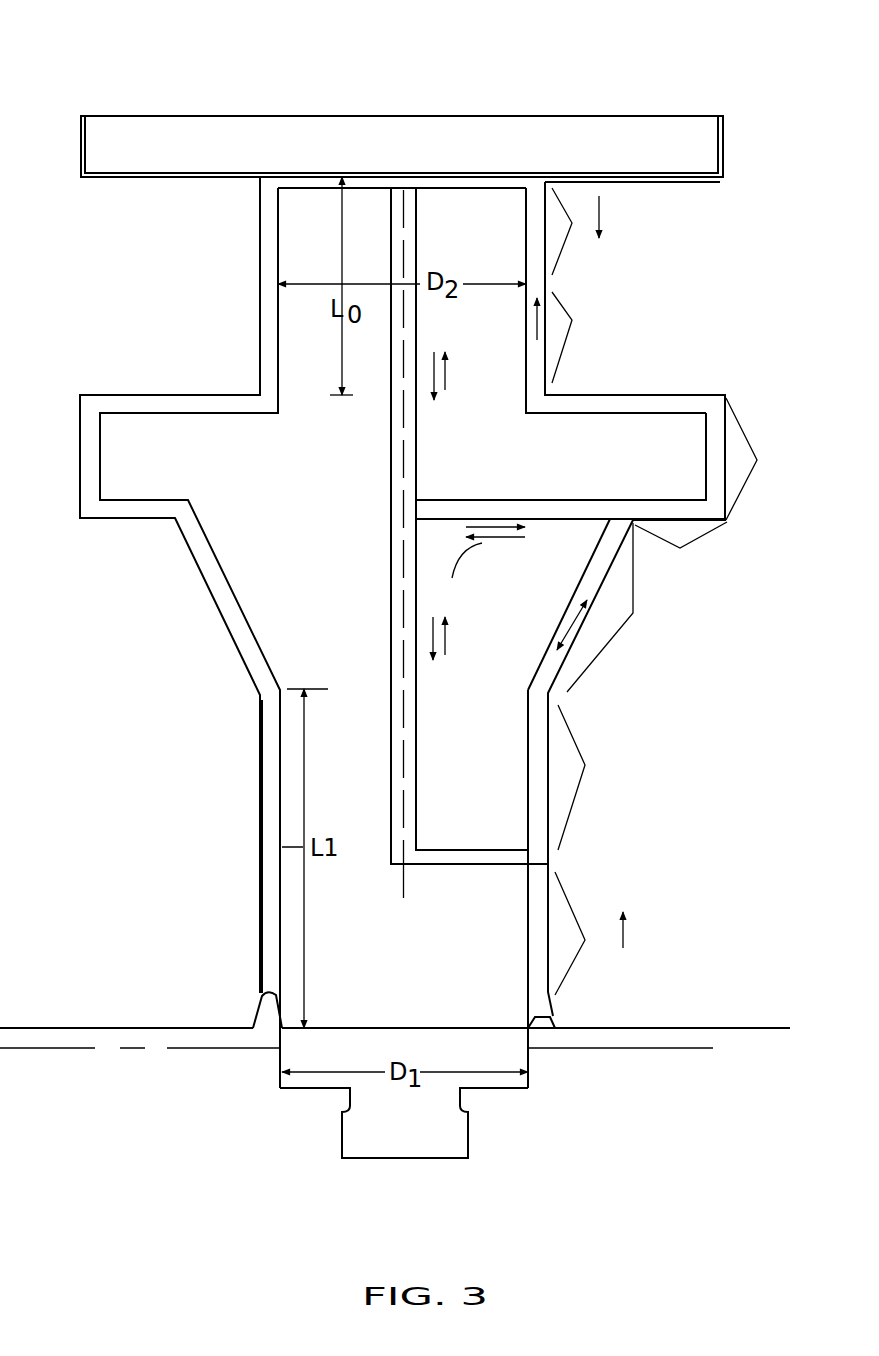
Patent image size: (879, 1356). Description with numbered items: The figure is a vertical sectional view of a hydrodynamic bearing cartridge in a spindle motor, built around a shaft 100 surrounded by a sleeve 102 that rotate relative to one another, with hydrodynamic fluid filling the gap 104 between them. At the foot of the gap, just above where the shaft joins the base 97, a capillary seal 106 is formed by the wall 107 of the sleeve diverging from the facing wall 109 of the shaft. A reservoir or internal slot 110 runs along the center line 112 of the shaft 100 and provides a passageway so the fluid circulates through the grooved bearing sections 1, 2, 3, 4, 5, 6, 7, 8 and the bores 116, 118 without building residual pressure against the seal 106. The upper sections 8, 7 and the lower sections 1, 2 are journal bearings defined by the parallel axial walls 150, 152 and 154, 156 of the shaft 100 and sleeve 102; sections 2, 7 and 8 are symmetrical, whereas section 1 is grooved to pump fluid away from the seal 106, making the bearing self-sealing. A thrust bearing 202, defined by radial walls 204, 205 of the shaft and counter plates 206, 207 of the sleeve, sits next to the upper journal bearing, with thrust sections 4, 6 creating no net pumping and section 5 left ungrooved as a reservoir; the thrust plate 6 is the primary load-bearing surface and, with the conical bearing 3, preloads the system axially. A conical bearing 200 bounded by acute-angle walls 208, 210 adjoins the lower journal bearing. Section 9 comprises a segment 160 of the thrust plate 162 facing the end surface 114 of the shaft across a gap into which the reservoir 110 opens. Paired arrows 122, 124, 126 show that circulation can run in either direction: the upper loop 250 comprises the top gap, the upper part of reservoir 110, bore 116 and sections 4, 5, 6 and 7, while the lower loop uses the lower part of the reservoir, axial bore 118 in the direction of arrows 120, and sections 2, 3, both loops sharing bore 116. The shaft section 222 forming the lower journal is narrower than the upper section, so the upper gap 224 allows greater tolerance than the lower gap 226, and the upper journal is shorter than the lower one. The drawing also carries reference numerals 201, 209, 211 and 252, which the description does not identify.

The bearing section 1 is at (589, 933).
The bearing section 2 is at (582, 777).
The bearing section 3 is at (608, 607).
The thrust bearing section 4 is at (681, 549).
The bearing section 5 is at (752, 459).
The thrust bearing section 6 is at (715, 388).
The bearing section 7 is at (568, 337).
The bearing section 8 is at (575, 231).
The bearing section 9 is at (530, 165).
The base 97 is at (433, 1123).
The shaft 100 is at (184, 470).
The sleeve 102 is at (72, 340).
The gap 104 is at (267, 332).
The capillary seal 106 is at (273, 1008).
The wall of the sleeve 107 is at (247, 1010).
The facing wall of the shaft 109 is at (278, 1002).
The reservoir 110 is at (383, 538).
The center line 112 is at (400, 892).
The end surface of the shaft 114 is at (470, 188).
The radial bore 116 is at (563, 498).
The axial bore 118 is at (457, 857).
The arrows 120 is at (573, 622).
The paired arrows 122 is at (427, 637).
The paired arrows 124 is at (537, 325).
The paired arrows 126 is at (423, 355).
The parallel axial wall of the shaft 150 is at (582, 300).
The parallel axial wall of the sleeve 152 is at (555, 283).
The parallel axial wall of the shaft 154 is at (527, 950).
The parallel axial wall of the sleeve 156 is at (548, 903).
The segment of thrust plate 160 is at (292, 175).
The thrust plate 162 is at (270, 183).
The conical bearing 200 is at (531, 630).
The upper passage 201 is at (511, 343).
The thrust bearing 202 is at (690, 447).
The radial wall of the shaft 204 is at (560, 417).
The radial wall of the shaft 205 is at (640, 500).
The counter plate 206 is at (635, 395).
The counter plate 207 is at (683, 523).
The acute angle wall 208 is at (597, 552).
The outer corner 209 is at (707, 432).
The acute angle wall 210 is at (587, 607).
The outer side wall 211 is at (725, 458).
The section of the shaft 222 is at (320, 1030).
The upper gap 224 is at (271, 260).
The gap 226 is at (263, 828).
The upper loop 250 is at (493, 458).
The bottom chamber 252 is at (490, 752).